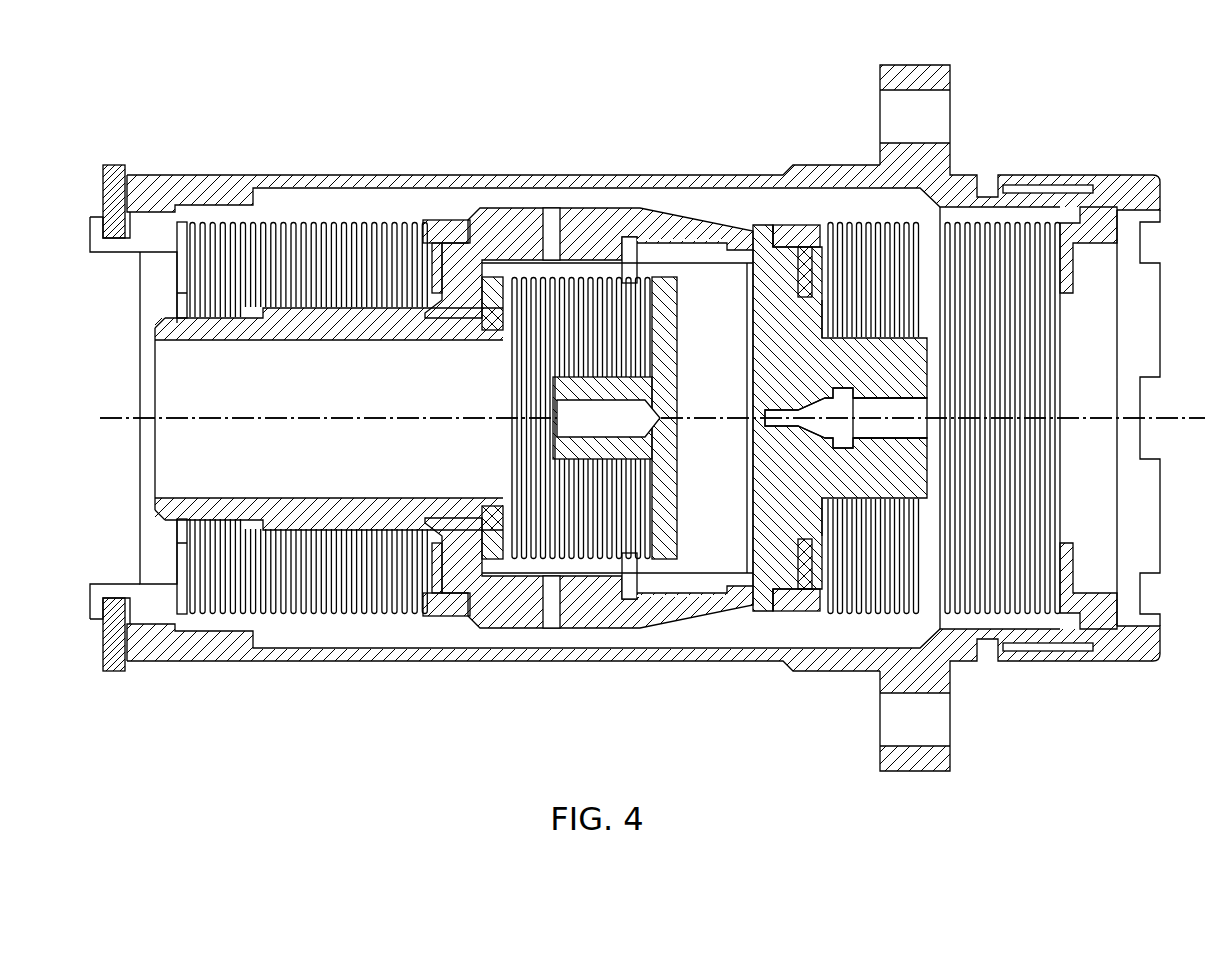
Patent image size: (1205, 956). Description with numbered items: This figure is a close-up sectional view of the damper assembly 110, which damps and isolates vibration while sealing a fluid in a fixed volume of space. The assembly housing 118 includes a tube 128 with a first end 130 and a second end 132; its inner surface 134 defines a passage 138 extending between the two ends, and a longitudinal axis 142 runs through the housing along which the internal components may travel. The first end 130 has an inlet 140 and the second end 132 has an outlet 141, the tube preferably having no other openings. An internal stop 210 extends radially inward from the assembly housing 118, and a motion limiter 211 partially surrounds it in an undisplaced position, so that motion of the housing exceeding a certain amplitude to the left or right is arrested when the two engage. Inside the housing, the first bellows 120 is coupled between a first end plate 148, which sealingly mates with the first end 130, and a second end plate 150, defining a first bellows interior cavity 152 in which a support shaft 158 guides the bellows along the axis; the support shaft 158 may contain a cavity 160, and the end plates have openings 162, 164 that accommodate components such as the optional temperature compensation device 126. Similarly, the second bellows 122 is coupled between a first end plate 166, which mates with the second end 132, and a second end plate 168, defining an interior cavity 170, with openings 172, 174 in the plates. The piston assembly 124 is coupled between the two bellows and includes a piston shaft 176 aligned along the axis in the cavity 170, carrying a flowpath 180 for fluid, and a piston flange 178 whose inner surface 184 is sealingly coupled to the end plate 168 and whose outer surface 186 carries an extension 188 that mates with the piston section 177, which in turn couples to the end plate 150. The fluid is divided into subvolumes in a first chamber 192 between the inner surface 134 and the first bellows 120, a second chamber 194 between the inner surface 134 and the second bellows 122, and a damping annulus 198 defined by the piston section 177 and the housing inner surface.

The damper assembly 110 is at (503, 136).
The assembly housing 118 is at (643, 418).
The first bellows 120 is at (308, 396).
The second bellows 122 is at (858, 205).
The piston assembly 124 is at (884, 500).
The temperature compensation device 126 is at (530, 567).
The tube 128 is at (375, 655).
The first end 130 is at (142, 205).
The second end 132 is at (1098, 192).
The inner surface 134 is at (330, 195).
The passage 138 is at (706, 198).
The inlet 140 is at (275, 418).
The outlet 141 is at (1078, 327).
The longitudinal axis 142 is at (285, 421).
The first end plate 148 is at (158, 592).
The second end plate 150 is at (448, 220).
The first bellows interior cavity 152 is at (215, 303).
The support shaft 158 is at (203, 322).
The cavity 160 is at (329, 419).
The opening 162 is at (172, 296).
The opening 164 is at (437, 308).
The first end plate 166 is at (1095, 232).
The second end plate 168 is at (790, 228).
The interior cavity 170 is at (898, 301).
The opening 172 is at (1063, 508).
The opening 174 is at (808, 539).
The piston shaft 176 is at (906, 455).
The piston section 177 is at (576, 437).
The piston flange 178 is at (765, 606).
The flowpath 180 is at (862, 416).
The inner surface 184 is at (776, 603).
The outer surface 186 is at (752, 612).
The extension 188 is at (712, 578).
The first chamber 192 is at (325, 647).
The second chamber 194 is at (860, 641).
The damping annulus 198 is at (533, 648).
The internal stop 210 is at (113, 165).
The motion limiter 211 is at (95, 224).